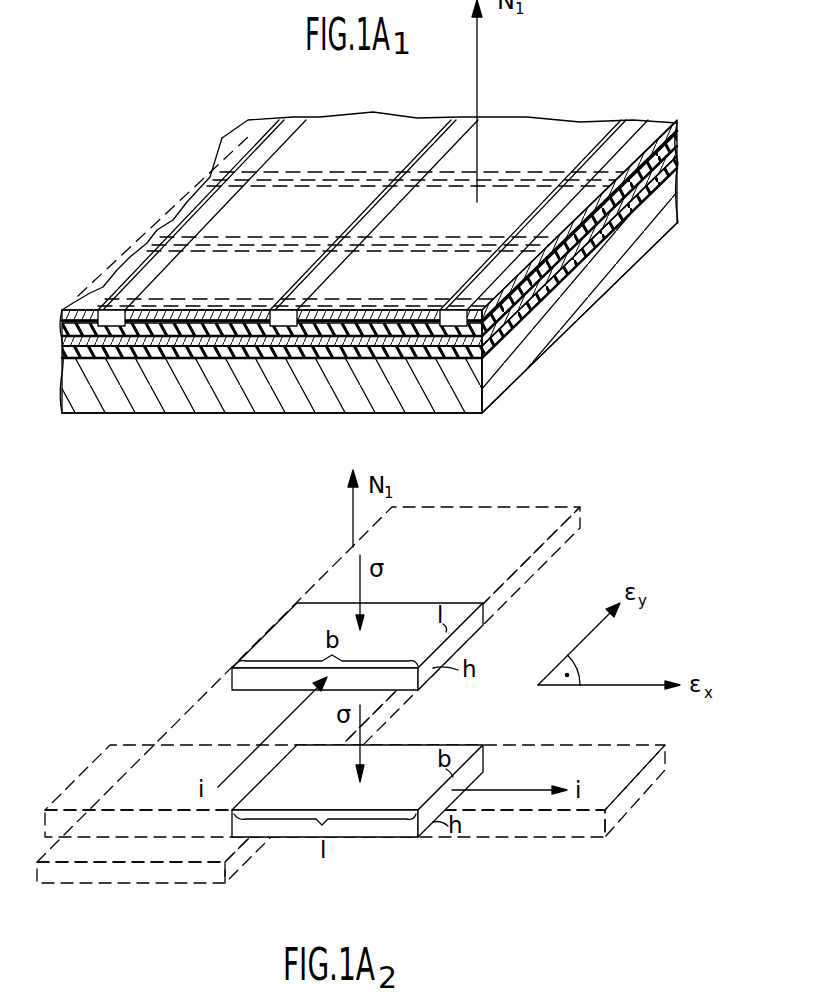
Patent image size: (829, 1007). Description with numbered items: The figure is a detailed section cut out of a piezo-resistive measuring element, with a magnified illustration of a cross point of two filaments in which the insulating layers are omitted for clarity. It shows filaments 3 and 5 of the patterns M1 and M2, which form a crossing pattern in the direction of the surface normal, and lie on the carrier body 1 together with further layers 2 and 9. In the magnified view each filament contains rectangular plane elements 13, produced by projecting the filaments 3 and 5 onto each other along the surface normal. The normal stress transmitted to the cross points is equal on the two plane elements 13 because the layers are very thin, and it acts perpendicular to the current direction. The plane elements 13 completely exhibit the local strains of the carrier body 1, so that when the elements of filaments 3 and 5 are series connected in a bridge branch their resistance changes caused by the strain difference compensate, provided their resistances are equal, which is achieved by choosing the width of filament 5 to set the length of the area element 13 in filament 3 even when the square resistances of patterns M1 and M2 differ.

In FIG. 1A1, the carrier body 1 is at (408, 270).
In FIG. 1A1, the lower dielectric layer 2 is at (680, 158).
In FIG. 1A1, the upper dielectric / passivation layer 9 is at (412, 216).
In FIG. 1A1, the pattern M1 is at (538, 320).
In FIG. 1A1, the pattern M2 is at (320, 322).
In FIG. 1A2, the filament 3 is at (560, 825).
In FIG. 1A2, the filament 5 is at (570, 530).
In FIG. 1A2, the plane element 13 is at (308, 648).